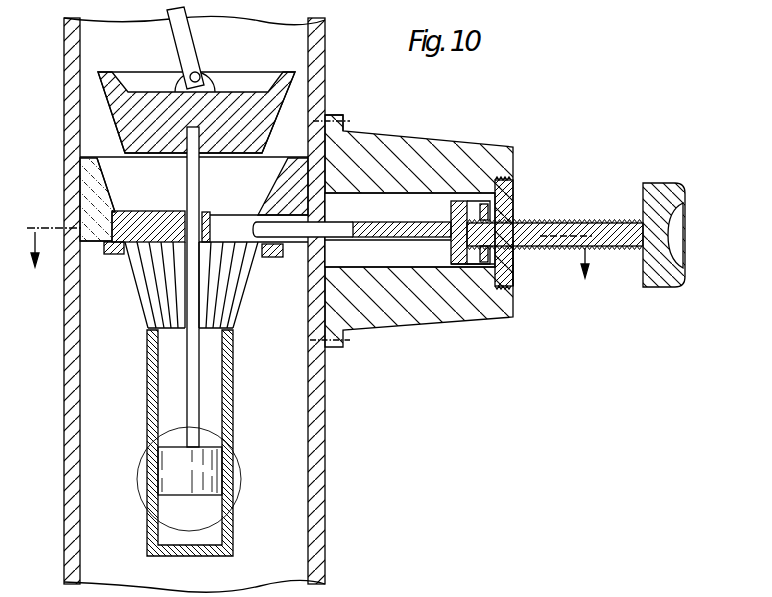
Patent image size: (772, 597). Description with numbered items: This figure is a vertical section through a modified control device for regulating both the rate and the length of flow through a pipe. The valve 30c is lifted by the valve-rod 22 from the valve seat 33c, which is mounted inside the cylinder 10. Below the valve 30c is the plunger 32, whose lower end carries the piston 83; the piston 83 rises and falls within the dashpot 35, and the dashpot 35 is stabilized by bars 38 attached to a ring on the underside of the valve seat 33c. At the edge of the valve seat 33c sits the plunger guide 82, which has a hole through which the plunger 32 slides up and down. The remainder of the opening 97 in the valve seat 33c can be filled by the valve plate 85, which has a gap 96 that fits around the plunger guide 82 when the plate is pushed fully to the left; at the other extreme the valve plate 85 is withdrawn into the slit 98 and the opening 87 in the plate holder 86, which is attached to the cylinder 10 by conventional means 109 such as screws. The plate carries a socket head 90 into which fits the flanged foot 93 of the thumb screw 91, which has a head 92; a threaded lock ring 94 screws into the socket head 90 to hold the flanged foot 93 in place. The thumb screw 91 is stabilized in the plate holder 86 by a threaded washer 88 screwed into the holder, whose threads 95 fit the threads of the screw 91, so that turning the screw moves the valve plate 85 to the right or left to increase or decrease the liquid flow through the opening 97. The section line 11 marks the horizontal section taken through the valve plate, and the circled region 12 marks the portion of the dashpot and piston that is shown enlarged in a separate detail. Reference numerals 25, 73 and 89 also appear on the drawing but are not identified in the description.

The cylinder 10 is at (321, 58).
The section line 11— 11 is at (311, 268).
The section 12 is at (236, 487).
The valve-rod 22 is at (188, 42).
The conical member 25 is at (127, 191).
The valve 30c is at (127, 119).
The plunger 32 is at (197, 183).
The valve seat 33c is at (84, 177).
The dashpot 35 is at (233, 406).
The bars 38 is at (248, 283).
The bushing 73 is at (206, 218).
The plunger guide 82 is at (146, 215).
The piston 83 is at (170, 482).
The valve plate 85 is at (372, 229).
The plate holder 86 is at (447, 152).
The opening 87 is at (347, 200).
The threaded washer 88 is at (505, 194).
The boss lower portion 89 is at (513, 300).
The socket head 90 is at (463, 268).
The thumb screw 91 is at (573, 222).
The head 92 is at (659, 195).
The flanged foot 93 is at (462, 266).
The threaded lock ring 94 is at (497, 219).
The threads 95 is at (513, 252).
The gap 96 is at (331, 237).
The opening 97 is at (234, 226).
The slit 98 is at (395, 239).
The conventional means 109 is at (347, 120).